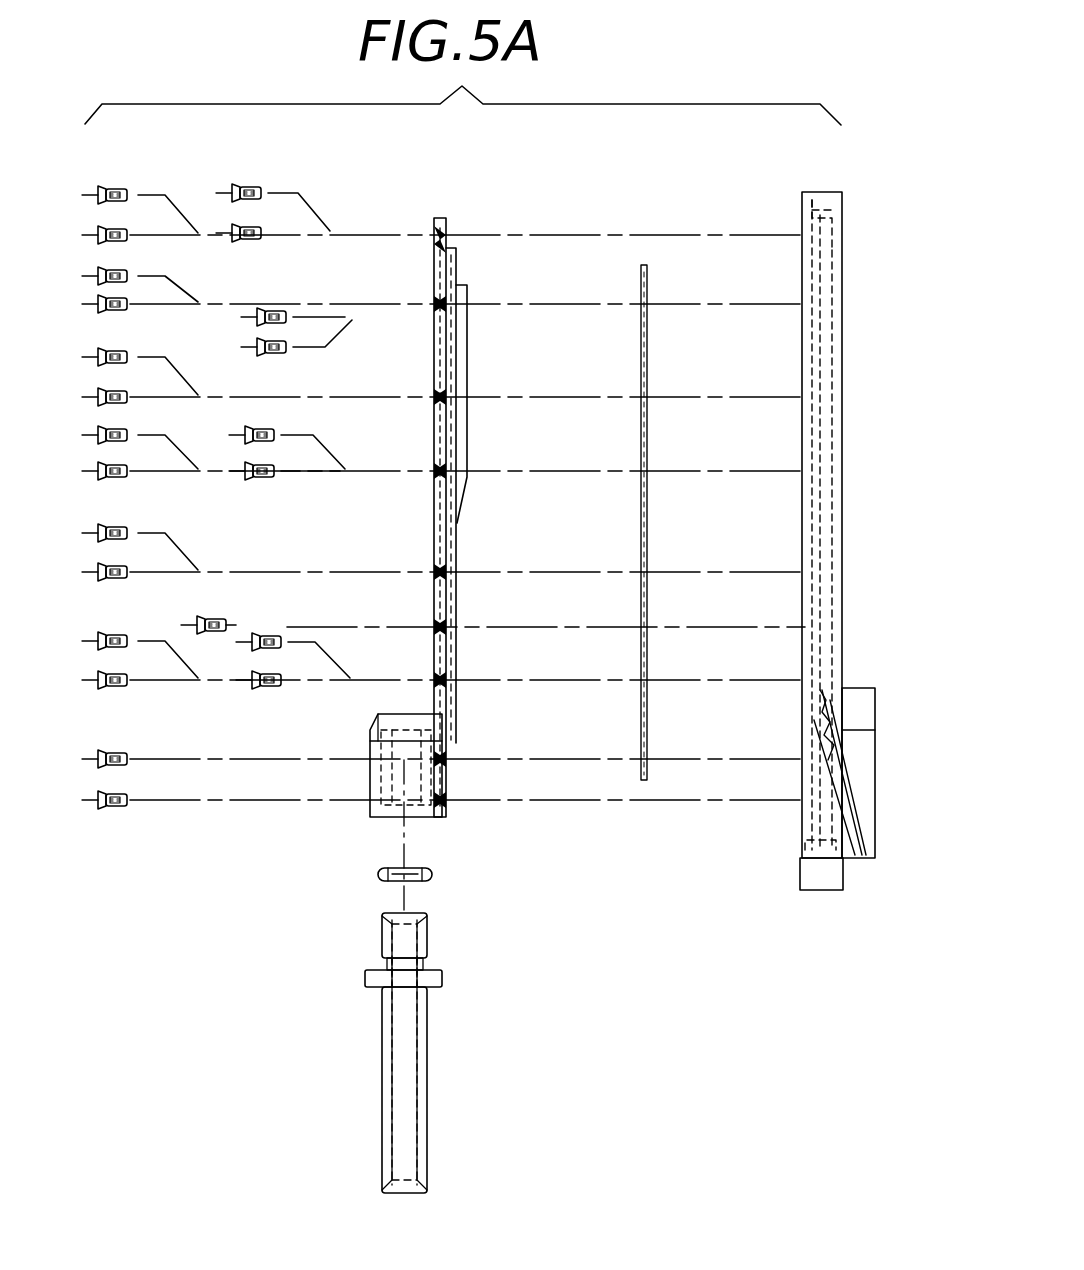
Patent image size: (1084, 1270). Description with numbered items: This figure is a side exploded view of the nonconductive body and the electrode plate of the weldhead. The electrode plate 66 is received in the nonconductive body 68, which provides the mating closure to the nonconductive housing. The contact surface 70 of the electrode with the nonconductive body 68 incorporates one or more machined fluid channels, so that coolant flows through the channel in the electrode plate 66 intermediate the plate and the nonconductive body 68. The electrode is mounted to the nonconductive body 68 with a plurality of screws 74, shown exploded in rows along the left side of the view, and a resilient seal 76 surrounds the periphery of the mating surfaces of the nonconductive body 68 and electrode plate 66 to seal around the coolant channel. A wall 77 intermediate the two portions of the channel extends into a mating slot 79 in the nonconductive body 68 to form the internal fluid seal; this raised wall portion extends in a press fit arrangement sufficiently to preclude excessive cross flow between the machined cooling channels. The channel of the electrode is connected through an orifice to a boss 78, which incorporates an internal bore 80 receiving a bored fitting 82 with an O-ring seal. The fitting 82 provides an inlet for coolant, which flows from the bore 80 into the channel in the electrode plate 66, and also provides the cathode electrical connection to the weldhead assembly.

The electrode plate 66 is at (441, 218).
The nonconductive body 68 is at (823, 192).
The contact surface 70 is at (458, 288).
The screws 74 is at (243, 188).
The resilient seal 76 is at (645, 778).
The wall 77 is at (467, 355).
The boss 78 is at (367, 795).
The mating slot 79 is at (837, 287).
The internal bore 80 is at (425, 800).
The bored fitting 82 is at (427, 1053).